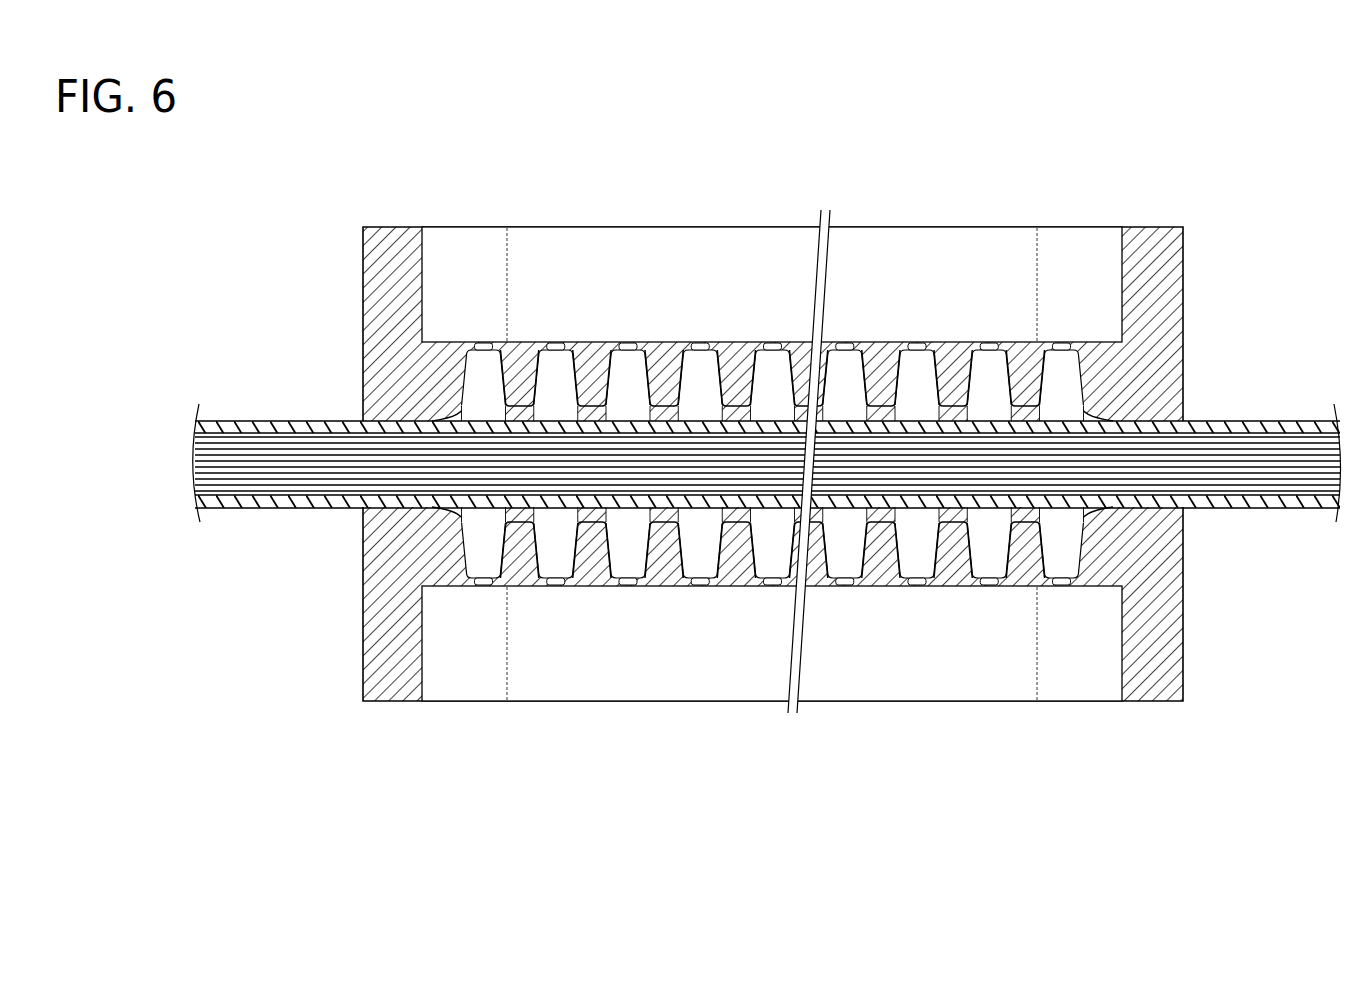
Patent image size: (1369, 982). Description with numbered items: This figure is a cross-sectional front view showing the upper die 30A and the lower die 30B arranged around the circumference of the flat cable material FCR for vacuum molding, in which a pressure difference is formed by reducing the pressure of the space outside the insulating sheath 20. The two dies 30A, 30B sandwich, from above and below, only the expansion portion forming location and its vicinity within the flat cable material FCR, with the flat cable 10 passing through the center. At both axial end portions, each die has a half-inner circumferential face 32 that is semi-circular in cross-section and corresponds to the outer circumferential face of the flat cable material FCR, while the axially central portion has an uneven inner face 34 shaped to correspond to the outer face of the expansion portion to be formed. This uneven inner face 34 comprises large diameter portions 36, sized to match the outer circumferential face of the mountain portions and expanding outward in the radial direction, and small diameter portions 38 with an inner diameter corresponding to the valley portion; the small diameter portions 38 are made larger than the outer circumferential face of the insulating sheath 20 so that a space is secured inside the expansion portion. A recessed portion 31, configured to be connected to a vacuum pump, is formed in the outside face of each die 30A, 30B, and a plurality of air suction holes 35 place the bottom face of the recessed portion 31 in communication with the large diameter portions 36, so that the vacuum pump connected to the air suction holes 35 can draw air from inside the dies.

The flat cable conductors 10 is at (296, 455).
The insulating sheath 20 is at (1253, 500).
The upper die 30A is at (1164, 211).
The lower die 30B is at (388, 713).
The recessed portion 31 is at (672, 243).
The half-inner circumferential face 32 is at (1150, 508).
The uneven inner face 34 is at (567, 380).
The air suction holes 35 is at (772, 348).
The large diameter portions 36 is at (896, 378).
The small diameter portions 38 is at (662, 410).
The flat cable material FCR is at (1260, 385).